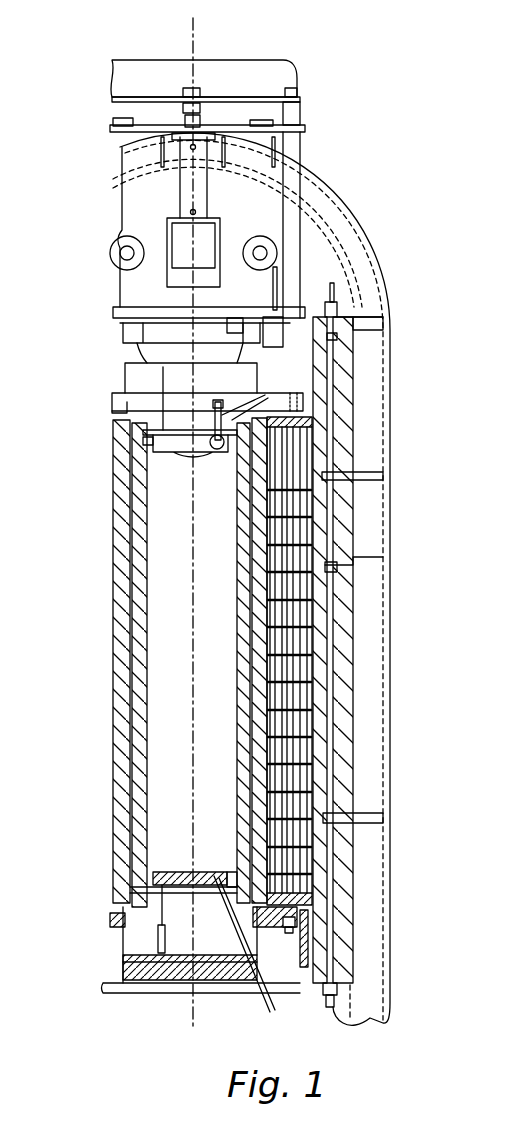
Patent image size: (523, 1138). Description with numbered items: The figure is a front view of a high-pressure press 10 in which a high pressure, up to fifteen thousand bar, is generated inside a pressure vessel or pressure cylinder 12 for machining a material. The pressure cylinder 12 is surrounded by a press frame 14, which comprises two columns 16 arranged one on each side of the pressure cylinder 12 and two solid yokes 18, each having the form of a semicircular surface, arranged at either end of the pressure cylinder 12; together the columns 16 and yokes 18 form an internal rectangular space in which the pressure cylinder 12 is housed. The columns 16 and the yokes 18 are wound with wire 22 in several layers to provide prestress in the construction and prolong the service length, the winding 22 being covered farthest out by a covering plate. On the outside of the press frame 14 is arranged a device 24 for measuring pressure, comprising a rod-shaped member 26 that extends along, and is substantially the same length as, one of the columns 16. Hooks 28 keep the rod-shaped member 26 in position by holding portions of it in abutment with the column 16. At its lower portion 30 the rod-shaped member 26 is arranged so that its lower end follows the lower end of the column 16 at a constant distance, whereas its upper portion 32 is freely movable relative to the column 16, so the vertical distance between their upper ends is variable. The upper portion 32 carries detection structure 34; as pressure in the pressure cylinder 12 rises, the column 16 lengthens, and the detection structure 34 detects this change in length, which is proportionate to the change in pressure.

The high-pressure press 10 is at (334, 122).
The pressure cylinder 12 is at (173, 788).
The press frame 14 is at (387, 364).
The column 16 is at (345, 431).
The yoke 18 is at (317, 268).
The wire winding 22 is at (330, 207).
The device for measuring pressure 24 is at (330, 677).
The rod-shaped member 26 is at (332, 607).
The hook 28 is at (365, 813).
The lower portion 30 is at (337, 988).
The upper portion 32 is at (333, 307).
The detection structure 34 is at (333, 302).